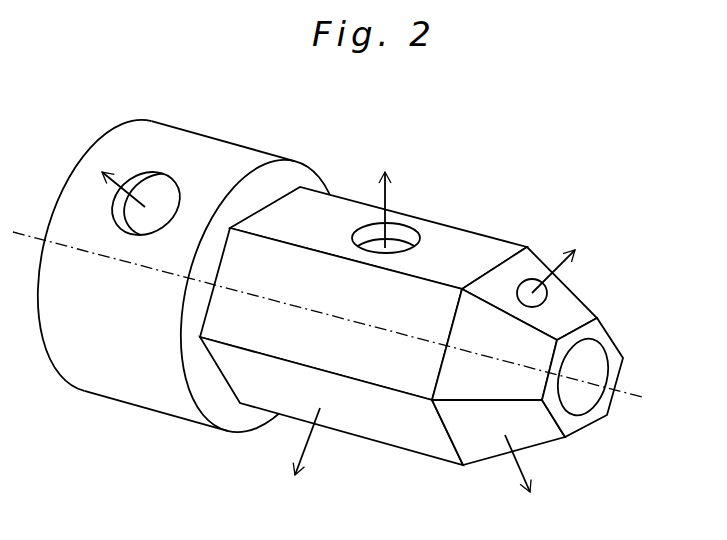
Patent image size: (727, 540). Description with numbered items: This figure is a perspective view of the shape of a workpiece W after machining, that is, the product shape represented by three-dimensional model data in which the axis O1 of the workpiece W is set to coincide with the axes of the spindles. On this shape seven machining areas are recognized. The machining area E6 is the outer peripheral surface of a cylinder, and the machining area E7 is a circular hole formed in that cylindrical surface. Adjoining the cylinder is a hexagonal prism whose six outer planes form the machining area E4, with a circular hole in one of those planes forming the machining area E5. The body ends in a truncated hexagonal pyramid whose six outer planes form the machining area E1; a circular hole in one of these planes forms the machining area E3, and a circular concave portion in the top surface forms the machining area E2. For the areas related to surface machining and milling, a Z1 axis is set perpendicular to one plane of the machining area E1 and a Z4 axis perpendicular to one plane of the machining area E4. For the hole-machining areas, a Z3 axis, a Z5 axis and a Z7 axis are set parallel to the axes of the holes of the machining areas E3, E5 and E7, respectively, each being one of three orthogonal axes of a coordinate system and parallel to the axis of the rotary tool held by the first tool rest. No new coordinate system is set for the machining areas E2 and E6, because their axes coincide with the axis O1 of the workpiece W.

The workpiece W is at (73, 83).
The machining area E1 is at (498, 432).
The machining area E2 is at (582, 377).
The machining area E3 is at (529, 293).
The machining area E4 is at (331, 401).
The machining area E5 is at (378, 238).
The machining area E6 is at (203, 284).
The machining area E7 is at (152, 204).
The Z1 axis Z1 is at (532, 478).
The Z3 axis Z3 is at (568, 260).
The Z4 axis Z4 is at (299, 458).
The Z5 axis Z5 is at (401, 199).
The Z7 axis Z7 is at (123, 176).
The axis of the workpiece O1 is at (348, 326).